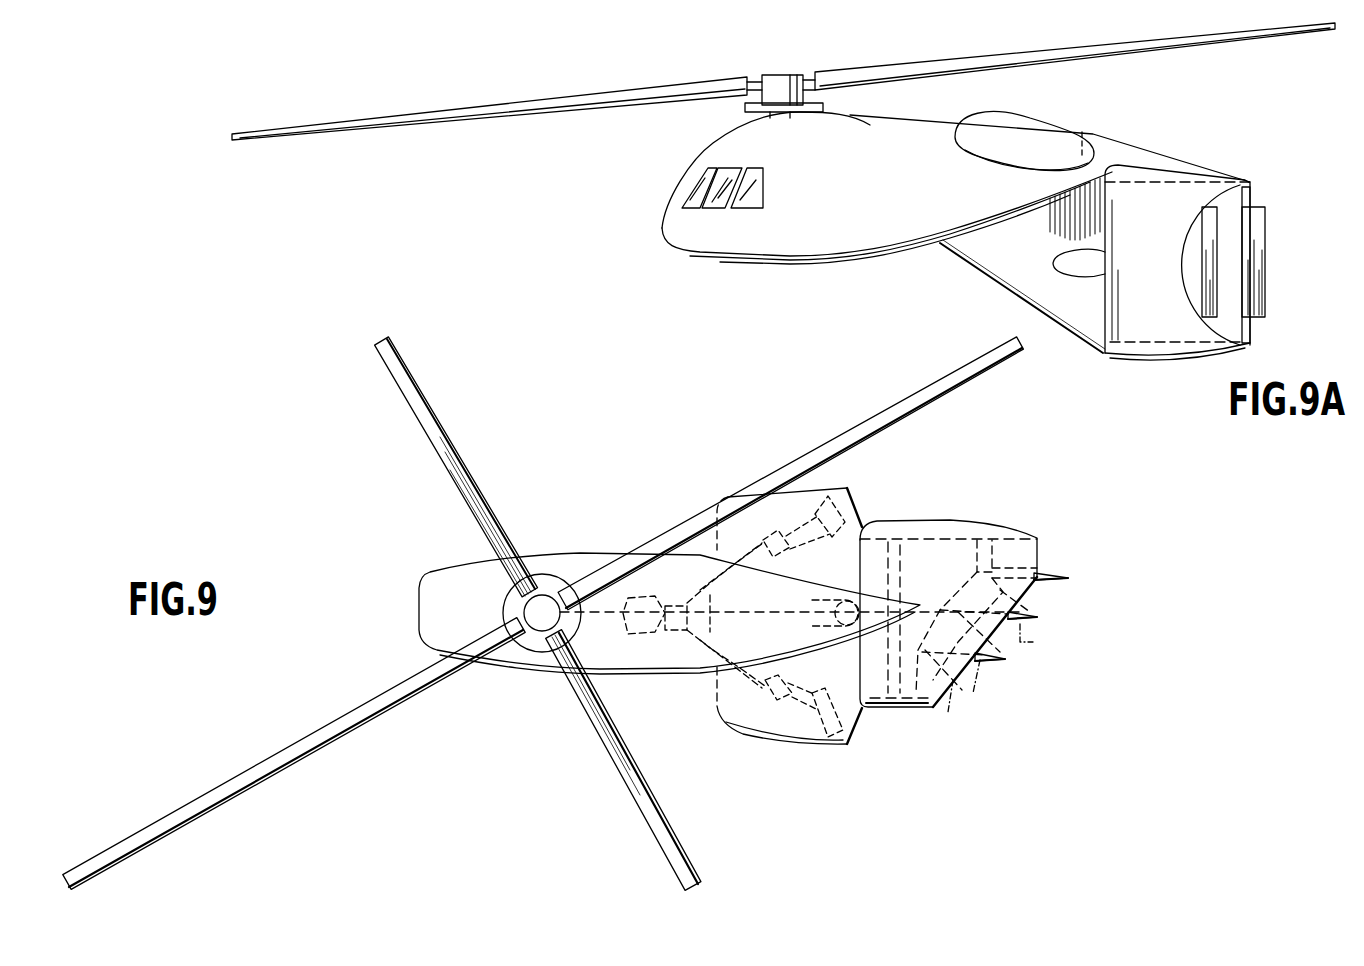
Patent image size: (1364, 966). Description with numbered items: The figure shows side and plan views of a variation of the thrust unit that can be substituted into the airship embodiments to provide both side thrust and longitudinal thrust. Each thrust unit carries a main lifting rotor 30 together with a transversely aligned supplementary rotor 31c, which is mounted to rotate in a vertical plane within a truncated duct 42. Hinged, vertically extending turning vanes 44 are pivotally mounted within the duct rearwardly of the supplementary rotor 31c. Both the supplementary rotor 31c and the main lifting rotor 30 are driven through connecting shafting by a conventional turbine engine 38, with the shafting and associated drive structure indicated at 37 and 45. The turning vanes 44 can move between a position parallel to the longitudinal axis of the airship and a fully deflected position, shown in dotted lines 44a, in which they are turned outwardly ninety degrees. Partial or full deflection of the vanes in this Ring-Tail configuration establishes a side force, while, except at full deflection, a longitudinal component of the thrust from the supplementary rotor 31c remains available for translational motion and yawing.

In FIG. 9A, the main lifting rotor 30 is at (692, 87).
In FIG. 9, the main lifting rotor 30 is at (505, 573).
In FIG. 9, the supplementary rotor 31c is at (900, 581).
In FIG. 9, the rotor drive transmission 37 is at (712, 602).
In FIG. 9, the turbine engine 38 is at (817, 547).
In FIG. 9A, the truncated duct 42 is at (1135, 362).
In FIG. 9, the truncated duct 42 is at (908, 527).
In FIG. 9A, the turning vanes 44 is at (1253, 320).
In FIG. 9, the turning vanes 44 is at (1044, 580).
In FIG. 9, the fully deflected vanes 44a is at (1022, 634).
In FIG. 9, the duct support structure 45 is at (976, 616).